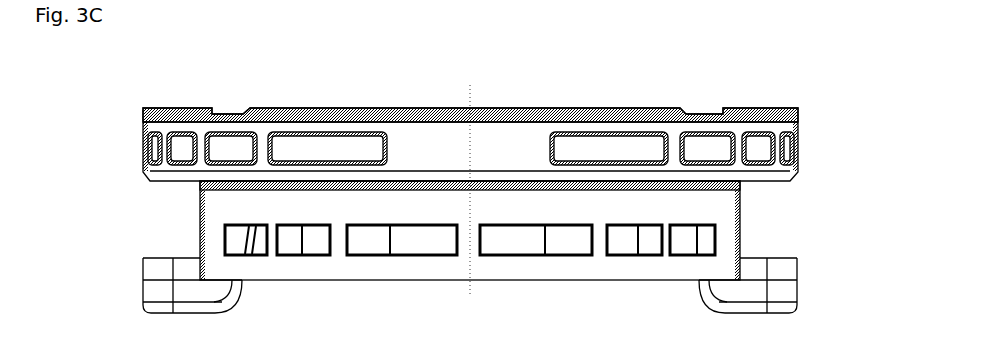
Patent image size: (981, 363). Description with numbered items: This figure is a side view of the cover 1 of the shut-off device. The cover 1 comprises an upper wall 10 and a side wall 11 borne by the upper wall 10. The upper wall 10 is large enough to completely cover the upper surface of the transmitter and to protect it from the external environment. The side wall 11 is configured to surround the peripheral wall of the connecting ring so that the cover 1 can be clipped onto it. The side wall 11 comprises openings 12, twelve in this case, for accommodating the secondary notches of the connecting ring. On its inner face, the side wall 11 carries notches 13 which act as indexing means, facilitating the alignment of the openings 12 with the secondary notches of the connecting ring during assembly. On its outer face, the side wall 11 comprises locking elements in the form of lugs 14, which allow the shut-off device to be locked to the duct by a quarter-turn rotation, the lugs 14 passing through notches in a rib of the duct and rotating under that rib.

The cover 1 is at (120, 115).
The upper wall 10 is at (490, 123).
The side wall 11 is at (227, 210).
The opening 12 is at (697, 240).
The notch 13 is at (717, 295).
The lug 14 is at (785, 290).